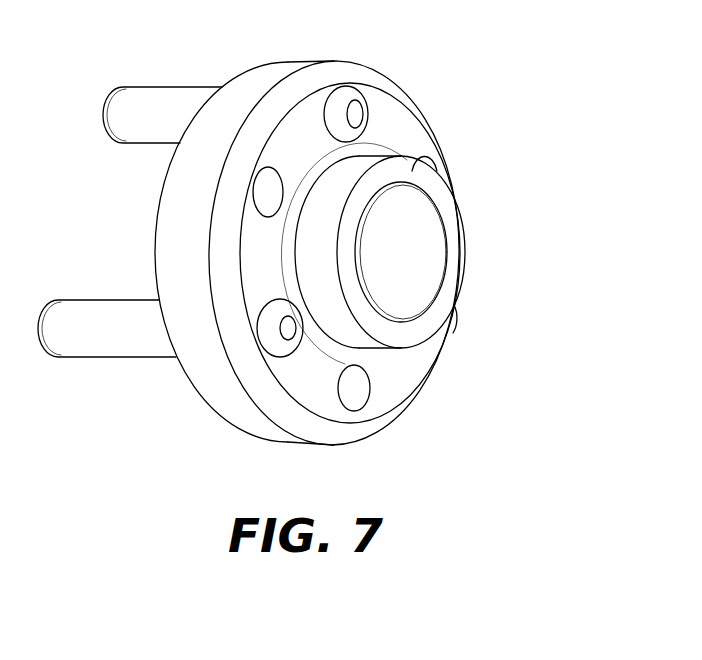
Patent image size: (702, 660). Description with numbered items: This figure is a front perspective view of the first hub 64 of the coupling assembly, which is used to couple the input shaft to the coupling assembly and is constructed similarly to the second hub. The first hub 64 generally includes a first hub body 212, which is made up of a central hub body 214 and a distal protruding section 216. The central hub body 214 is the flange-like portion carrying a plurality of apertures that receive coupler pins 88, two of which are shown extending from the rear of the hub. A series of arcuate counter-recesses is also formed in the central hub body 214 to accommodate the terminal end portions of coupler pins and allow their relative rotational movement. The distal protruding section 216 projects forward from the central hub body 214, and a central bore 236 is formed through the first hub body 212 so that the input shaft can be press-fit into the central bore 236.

The first hub 64 is at (502, 102).
The coupler pins 88 is at (146, 130).
The first hub body 212 is at (336, 76).
The central hub body 214 is at (233, 407).
The distal protruding section 216 is at (455, 275).
The central bore 236 is at (385, 258).